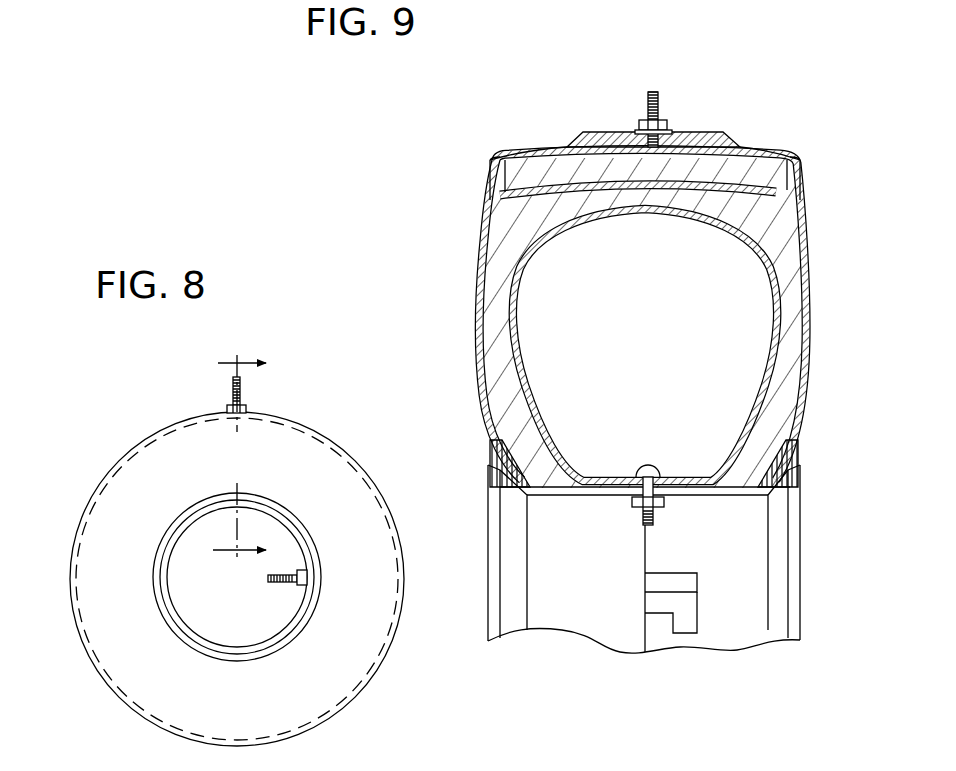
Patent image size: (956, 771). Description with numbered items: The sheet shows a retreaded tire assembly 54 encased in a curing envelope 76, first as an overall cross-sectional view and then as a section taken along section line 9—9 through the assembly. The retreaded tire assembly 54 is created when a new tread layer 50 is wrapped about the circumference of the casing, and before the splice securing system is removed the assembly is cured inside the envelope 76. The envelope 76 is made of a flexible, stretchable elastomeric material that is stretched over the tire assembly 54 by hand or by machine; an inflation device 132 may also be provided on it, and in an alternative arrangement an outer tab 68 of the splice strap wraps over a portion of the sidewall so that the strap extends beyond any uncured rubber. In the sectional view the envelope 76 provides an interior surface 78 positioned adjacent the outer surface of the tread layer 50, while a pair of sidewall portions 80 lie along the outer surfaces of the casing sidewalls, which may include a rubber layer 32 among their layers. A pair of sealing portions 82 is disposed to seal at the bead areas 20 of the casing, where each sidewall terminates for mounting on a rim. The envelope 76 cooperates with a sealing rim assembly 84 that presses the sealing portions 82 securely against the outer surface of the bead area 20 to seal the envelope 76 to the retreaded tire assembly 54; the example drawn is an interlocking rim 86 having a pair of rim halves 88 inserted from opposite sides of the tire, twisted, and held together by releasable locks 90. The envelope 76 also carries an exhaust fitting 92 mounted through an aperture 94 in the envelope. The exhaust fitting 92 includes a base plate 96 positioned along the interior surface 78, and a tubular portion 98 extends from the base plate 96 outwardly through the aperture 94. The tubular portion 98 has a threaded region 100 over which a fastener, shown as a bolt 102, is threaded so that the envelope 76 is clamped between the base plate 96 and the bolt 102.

In FIG. 8, the section line 9— 9 is at (242, 458).
In FIG. 9, the bead area 20 is at (537, 443).
In FIG. 9, the rubber layer 32 is at (497, 326).
In FIG. 9, the tread layer 50 is at (800, 206).
In FIG. 8, the retreaded tire assembly 54 is at (115, 447).
In FIG. 9, the outer tab 68 is at (497, 180).
In FIG. 9, the curing envelope 76 is at (752, 147).
In FIG. 8, the curing envelope 76 is at (287, 417).
In FIG. 9, the interior surface 78 is at (518, 164).
In FIG. 9, the sidewall portion 80 is at (489, 228).
In FIG. 9, the sealing portion 82 is at (507, 462).
In FIG. 9, the sealing rim assembly 84 is at (682, 618).
In FIG. 8, the sealing rim assembly 84 is at (182, 547).
In FIG. 9, the interlocking rim 86 is at (742, 632).
In FIG. 9, the rim half 88 is at (563, 618).
In FIG. 9, the releasable lock 90 is at (696, 601).
In FIG. 9, the exhaust fitting 92 is at (690, 73).
In FIG. 8, the exhaust fitting 92 is at (231, 366).
In FIG. 9, the aperture 94 is at (675, 131).
In FIG. 9, the base plate 96 is at (600, 146).
In FIG. 9, the tubular portion 98 is at (661, 95).
In FIG. 8, the tubular portion 98 is at (232, 388).
In FIG. 9, the threaded region 100 is at (641, 93).
In FIG. 9, the bolt 102 is at (637, 128).
In FIG. 8, the bolt 102 is at (230, 407).
In FIG. 8, the inflation device 132 is at (280, 583).